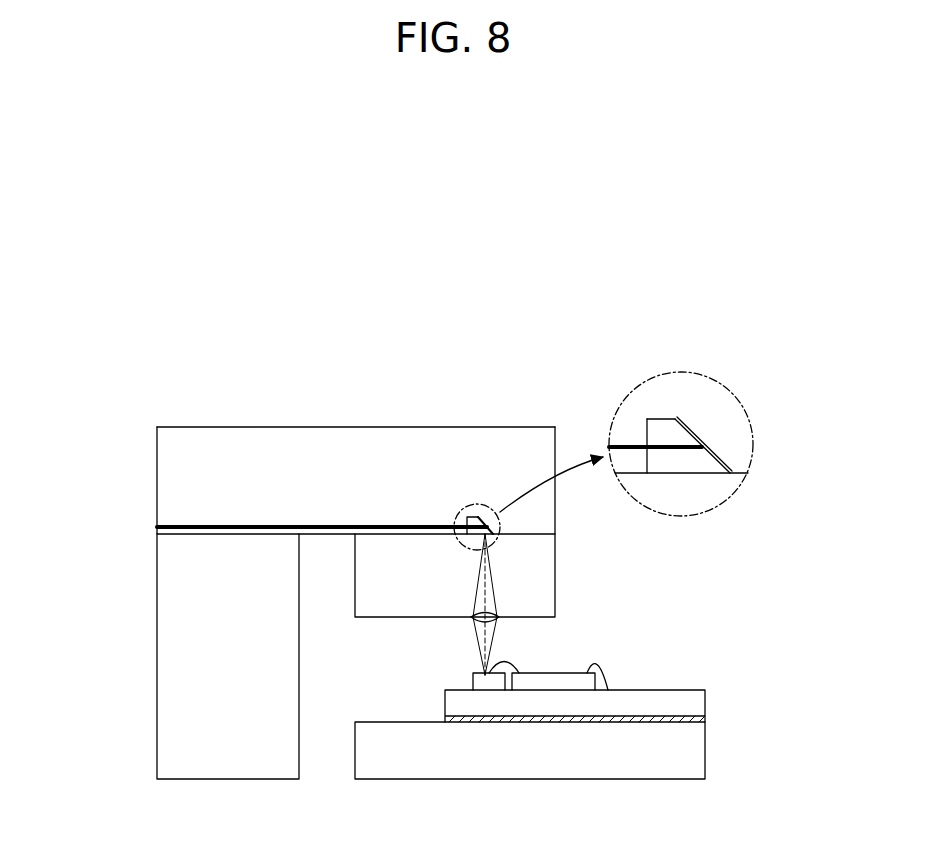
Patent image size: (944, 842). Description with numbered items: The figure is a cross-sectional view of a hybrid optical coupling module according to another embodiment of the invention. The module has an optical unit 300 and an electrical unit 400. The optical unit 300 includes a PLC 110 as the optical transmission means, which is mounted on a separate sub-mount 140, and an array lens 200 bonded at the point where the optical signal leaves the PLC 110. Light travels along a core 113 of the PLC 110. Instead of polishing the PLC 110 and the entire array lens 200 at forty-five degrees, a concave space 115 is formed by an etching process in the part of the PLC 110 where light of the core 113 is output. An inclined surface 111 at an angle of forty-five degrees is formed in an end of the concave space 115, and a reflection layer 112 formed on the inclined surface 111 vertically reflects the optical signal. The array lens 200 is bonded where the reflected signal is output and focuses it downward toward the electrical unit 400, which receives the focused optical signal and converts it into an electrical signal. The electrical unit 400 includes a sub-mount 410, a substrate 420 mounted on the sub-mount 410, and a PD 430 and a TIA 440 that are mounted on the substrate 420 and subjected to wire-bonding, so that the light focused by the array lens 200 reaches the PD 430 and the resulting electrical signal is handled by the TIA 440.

The optical unit 300 is at (224, 424).
The PLC 110 is at (307, 437).
The inclined surface 111 is at (675, 422).
The reflection layer 112 is at (695, 430).
The core 113 is at (630, 445).
The concave space 115 is at (672, 458).
The array lens 200 is at (550, 583).
The sub-mount 140 is at (168, 664).
The electrical unit 400 is at (567, 705).
The sub-mount 410 is at (697, 752).
The substrate 420 is at (663, 688).
The PD 430 is at (480, 680).
The TIA 440 is at (563, 677).